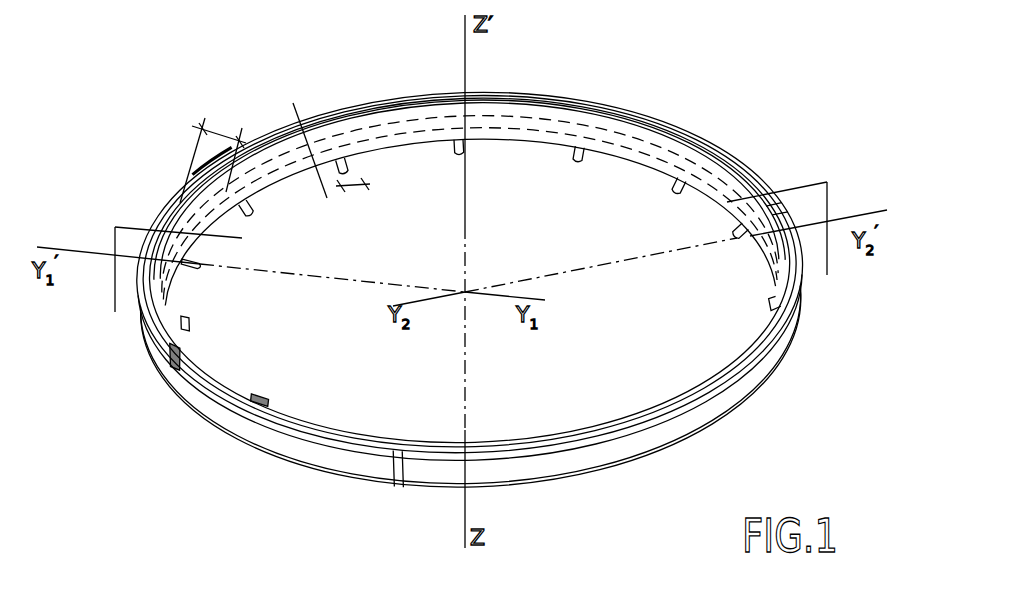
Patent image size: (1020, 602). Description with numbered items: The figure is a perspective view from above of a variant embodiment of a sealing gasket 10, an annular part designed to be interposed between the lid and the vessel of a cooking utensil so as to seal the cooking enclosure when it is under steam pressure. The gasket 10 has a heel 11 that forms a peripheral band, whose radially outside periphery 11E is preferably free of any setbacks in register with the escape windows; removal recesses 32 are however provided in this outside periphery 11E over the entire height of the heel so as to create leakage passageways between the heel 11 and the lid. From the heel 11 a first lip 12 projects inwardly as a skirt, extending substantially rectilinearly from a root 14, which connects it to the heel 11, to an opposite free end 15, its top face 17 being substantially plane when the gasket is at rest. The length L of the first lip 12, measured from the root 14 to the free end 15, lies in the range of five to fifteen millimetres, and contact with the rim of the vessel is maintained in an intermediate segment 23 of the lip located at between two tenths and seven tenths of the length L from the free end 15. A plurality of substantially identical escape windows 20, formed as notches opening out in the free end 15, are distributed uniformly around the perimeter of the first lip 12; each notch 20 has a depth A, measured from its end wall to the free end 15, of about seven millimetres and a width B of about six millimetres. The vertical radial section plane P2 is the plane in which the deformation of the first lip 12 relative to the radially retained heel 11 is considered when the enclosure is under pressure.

The sealing gasket 10 is at (702, 131).
The heel 11 is at (205, 414).
The radially outside periphery of the heel 11E is at (296, 443).
The first lip 12 is at (636, 151).
The root 14 is at (561, 113).
The free end 15 is at (625, 162).
The top face 17 is at (392, 134).
The escape window 20 is at (457, 147).
The intermediate segment 23 is at (251, 191).
The removal recesses 32 is at (790, 205).
The length of the first lip L is at (246, 142).
The depth of the notches A is at (300, 184).
The width of the notches B is at (362, 192).
The vertical radial section plane P2 is at (127, 240).